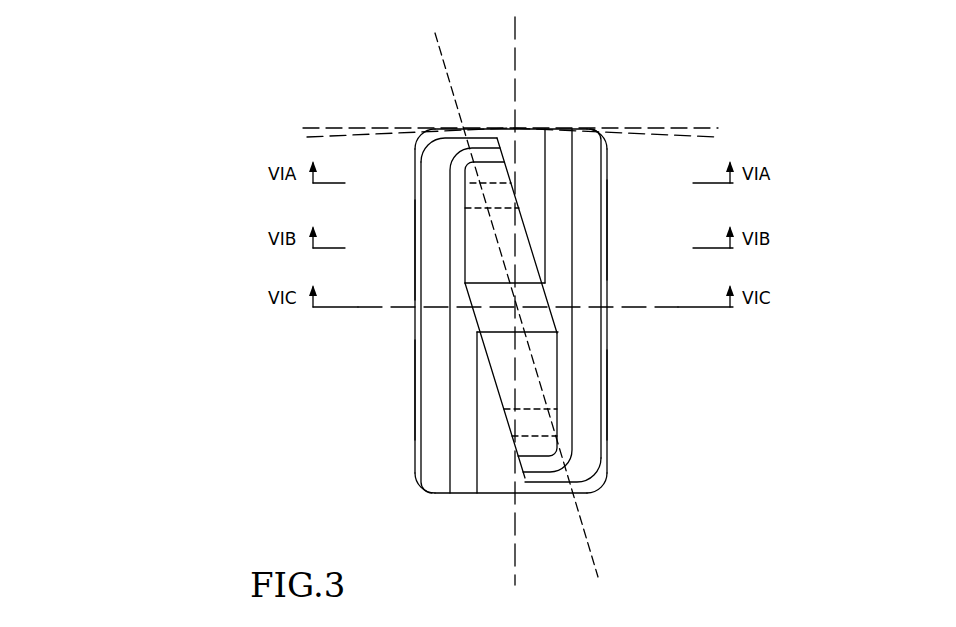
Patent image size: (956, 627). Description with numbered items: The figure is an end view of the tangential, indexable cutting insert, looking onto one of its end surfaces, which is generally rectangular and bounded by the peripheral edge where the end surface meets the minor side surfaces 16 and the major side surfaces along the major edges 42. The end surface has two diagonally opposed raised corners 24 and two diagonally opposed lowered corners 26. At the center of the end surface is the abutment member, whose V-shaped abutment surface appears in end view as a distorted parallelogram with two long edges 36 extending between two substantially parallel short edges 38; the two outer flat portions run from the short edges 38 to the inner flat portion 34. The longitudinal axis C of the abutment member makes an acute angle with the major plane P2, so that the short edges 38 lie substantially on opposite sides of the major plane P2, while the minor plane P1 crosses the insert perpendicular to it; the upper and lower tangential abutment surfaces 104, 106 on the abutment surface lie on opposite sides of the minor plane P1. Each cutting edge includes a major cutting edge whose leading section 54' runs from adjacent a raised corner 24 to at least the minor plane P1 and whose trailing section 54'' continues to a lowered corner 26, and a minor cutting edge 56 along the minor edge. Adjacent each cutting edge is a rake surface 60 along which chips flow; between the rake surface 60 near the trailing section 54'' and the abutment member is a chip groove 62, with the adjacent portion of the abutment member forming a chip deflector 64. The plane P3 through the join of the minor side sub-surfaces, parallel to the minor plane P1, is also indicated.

The minor side surface 16 is at (560, 88).
The raised corner 24 is at (414, 132).
The lowered corner 26 is at (614, 138).
The inner portion 34 is at (480, 303).
The long edge 36 is at (480, 377).
The short edge 38 is at (494, 163).
The major edge 42 is at (608, 246).
The leading section 54' is at (553, 320).
The trailing section 54'' is at (510, 310).
The minor cutting edge 56 is at (478, 190).
The rake surface 60 is at (434, 198).
The chip groove 62 is at (463, 432).
The chip deflector 64 is at (538, 170).
The upper tangential abutment surface 104 is at (473, 193).
The lower tangential abutment surface 106 is at (533, 427).
The minor plane P1 is at (657, 310).
The major plane P2 is at (517, 93).
The plane P3 is at (333, 127).
The longitudinal axis C is at (580, 537).